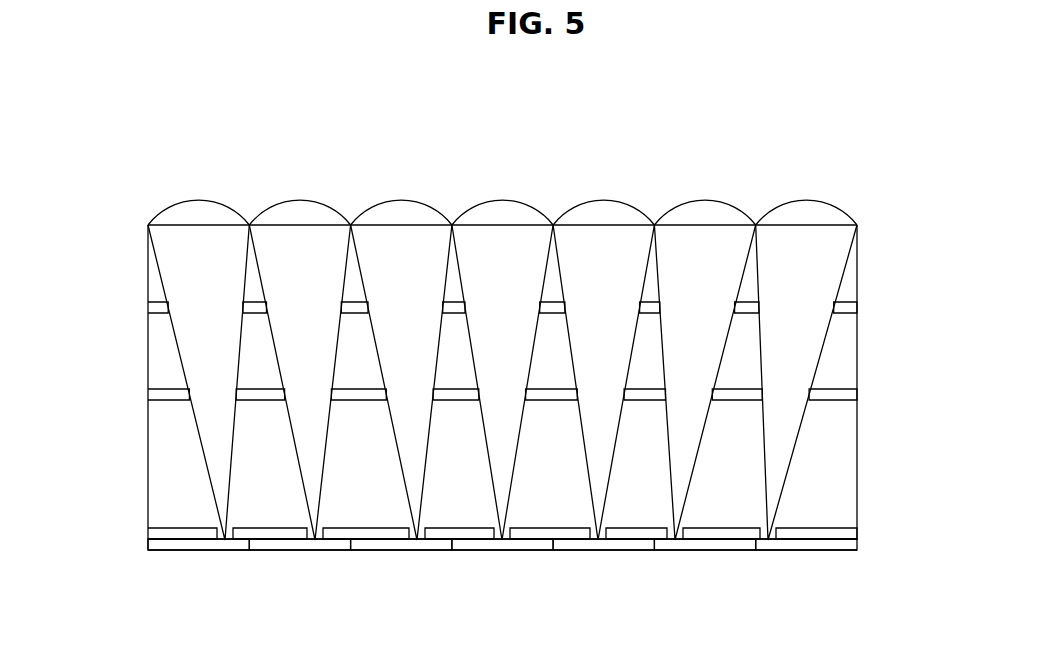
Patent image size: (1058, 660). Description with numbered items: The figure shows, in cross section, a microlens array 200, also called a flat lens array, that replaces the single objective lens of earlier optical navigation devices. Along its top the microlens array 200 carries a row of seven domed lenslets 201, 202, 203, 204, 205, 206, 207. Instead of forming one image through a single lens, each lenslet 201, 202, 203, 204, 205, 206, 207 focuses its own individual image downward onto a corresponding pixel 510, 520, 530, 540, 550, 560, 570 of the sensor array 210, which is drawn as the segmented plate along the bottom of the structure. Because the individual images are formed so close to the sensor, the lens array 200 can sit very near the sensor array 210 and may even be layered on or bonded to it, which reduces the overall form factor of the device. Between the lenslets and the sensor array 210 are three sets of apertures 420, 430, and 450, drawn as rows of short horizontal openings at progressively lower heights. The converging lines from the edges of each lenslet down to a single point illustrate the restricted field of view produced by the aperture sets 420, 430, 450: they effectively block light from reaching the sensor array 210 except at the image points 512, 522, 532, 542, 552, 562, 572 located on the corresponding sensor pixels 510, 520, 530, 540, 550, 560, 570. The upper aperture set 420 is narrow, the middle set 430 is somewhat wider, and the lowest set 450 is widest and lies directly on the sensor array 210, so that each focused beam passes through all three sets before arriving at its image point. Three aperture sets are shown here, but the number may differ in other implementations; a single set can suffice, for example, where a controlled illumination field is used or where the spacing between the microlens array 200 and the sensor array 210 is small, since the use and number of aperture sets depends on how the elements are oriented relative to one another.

The microlens array 200 is at (835, 200).
The lenslet 201 is at (190, 200).
The lenslet 202 is at (277, 200).
The lenslet 203 is at (383, 200).
The lenslet 204 is at (488, 200).
The lenslet 205 is at (588, 200).
The lenslet 206 is at (676, 200).
The lenslet 207 is at (780, 200).
The sensor array 210 is at (148, 547).
The aperture set 420 is at (857, 300).
The aperture set 430 is at (837, 385).
The aperture set 450 is at (825, 525).
The pixel 510 is at (170, 552).
The image point 512 is at (218, 552).
The pixel 520 is at (267, 552).
The image point 522 is at (315, 552).
The pixel 530 is at (368, 552).
The image point 532 is at (417, 552).
The pixel 540 is at (467, 552).
The image point 542 is at (507, 552).
The pixel 550 is at (570, 552).
The image point 552 is at (603, 552).
The pixel 560 is at (715, 552).
The image point 562 is at (683, 552).
The pixel 570 is at (812, 552).
The image point 572 is at (777, 552).